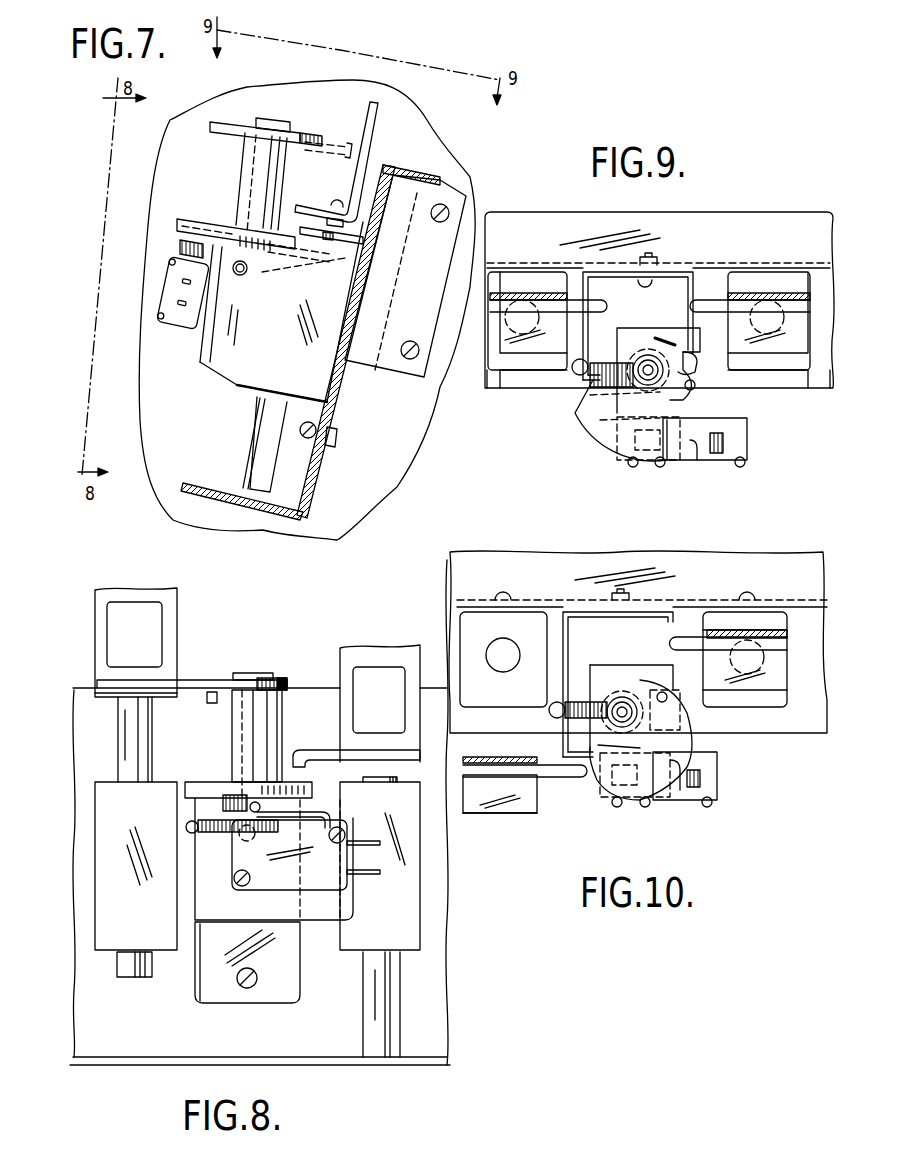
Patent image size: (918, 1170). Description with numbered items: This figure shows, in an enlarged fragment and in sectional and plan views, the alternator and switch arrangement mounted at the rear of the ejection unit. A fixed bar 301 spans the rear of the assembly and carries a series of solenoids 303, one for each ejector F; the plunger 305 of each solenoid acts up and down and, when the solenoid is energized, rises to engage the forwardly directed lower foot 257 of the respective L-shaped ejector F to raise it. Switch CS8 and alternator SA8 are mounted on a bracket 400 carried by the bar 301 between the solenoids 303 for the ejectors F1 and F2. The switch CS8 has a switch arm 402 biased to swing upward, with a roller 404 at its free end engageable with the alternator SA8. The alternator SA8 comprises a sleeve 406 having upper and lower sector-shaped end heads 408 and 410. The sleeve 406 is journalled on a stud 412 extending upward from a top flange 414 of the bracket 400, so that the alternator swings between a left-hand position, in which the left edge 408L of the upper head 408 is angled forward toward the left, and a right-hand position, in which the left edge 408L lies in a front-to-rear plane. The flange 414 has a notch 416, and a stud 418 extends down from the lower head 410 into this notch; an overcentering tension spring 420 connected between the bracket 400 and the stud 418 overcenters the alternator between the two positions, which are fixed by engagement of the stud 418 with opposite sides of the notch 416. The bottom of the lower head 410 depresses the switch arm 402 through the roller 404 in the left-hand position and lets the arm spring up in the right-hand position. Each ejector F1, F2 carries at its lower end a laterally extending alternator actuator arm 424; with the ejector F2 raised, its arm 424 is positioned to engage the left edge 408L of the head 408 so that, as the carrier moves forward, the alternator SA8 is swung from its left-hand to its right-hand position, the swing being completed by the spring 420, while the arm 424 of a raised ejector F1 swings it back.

In FIG. 7, the foot 257 is at (313, 203).
In FIG. 9, the foot 257 is at (487, 387).
In FIG. 10, the foot 257 is at (497, 815).
In FIG. 8, the foot 257 is at (103, 700).
In FIG. 7, the fixed bar 301 is at (453, 163).
In FIG. 9, the fixed bar 301 is at (667, 217).
In FIG. 10, the fixed bar 301 is at (820, 708).
In FIG. 8, the fixed bar 301 is at (120, 1060).
In FIG. 7, the solenoid 303 is at (235, 383).
In FIG. 9, the solenoid 303 is at (515, 372).
In FIG. 8, the solenoid 303 is at (113, 940).
In FIG. 7, the plunger 305 is at (253, 443).
In FIG. 8, the plunger 305 is at (120, 750).
In FIG. 7, the bracket 400 is at (200, 362).
In FIG. 8, the bracket 400 is at (230, 997).
In FIG. 9, the switch arm 402 is at (697, 443).
In FIG. 10, the switch arm 402 is at (680, 787).
In FIG. 8, the switch arm 402 is at (313, 817).
In FIG. 7, the roller 404 is at (180, 253).
In FIG. 8, the roller 404 is at (223, 806).
In FIG. 7, the sleeve 406 is at (245, 177).
In FIG. 8, the sleeve 406 is at (233, 742).
In FIG. 7, the upper head 408 is at (217, 133).
In FIG. 9, the upper head 408 is at (600, 430).
In FIG. 10, the upper head 408 is at (625, 773).
In FIG. 8, the upper head 408 is at (222, 682).
In FIG. 9, the left edge of upper head 408L is at (587, 380).
In FIG. 10, the left edge of upper head 408L is at (560, 753).
In FIG. 7, the lower head 410 is at (187, 217).
In FIG. 9, the lower head 410 is at (607, 457).
In FIG. 10, the lower head 410 is at (657, 800).
In FIG. 8, the lower head 410 is at (210, 782).
In FIG. 7, the stud 412 is at (273, 122).
In FIG. 9, the stud 412 is at (648, 357).
In FIG. 10, the stud 412 is at (620, 697).
In FIG. 8, the stud 412 is at (257, 673).
In FIG. 7, the top flange 414 is at (312, 258).
In FIG. 9, the top flange 414 is at (602, 373).
In FIG. 10, the top flange 414 is at (588, 668).
In FIG. 7, the notch 416 is at (268, 271).
In FIG. 9, the notch 416 is at (690, 361).
In FIG. 10, the notch 416 is at (680, 722).
In FIG. 7, the stud 418 is at (246, 273).
In FIG. 9, the stud 418 is at (700, 400).
In FIG. 10, the stud 418 is at (683, 690).
In FIG. 7, the overcentering tension spring 420 is at (233, 287).
In FIG. 10, the overcentering tension spring 420 is at (577, 697).
In FIG. 8, the overcentering tension spring 420 is at (187, 827).
In FIG. 7, the alternator actuator arm 424 is at (365, 236).
In FIG. 9, the alternator actuator arm 424 is at (610, 303).
In FIG. 10, the alternator actuator arm 424 is at (663, 641).
In FIG. 8, the alternator actuator arm 424 is at (183, 690).
In FIG. 7, the switch CS8 is at (185, 330).
In FIG. 9, the switch CS8 is at (733, 453).
In FIG. 10, the switch CS8 is at (713, 783).
In FIG. 8, the switch CS8 is at (250, 885).
In FIG. 7, the alternator SA8 is at (298, 125).
In FIG. 8, the alternator SA8 is at (277, 672).
In FIG. 7, the ejector F is at (380, 104).
In FIG. 9, the ejector F1 is at (765, 290).
In FIG. 10, the ejector F1 is at (745, 659).
In FIG. 8, the ejector F1 is at (383, 648).
In FIG. 9, the ejector F2 is at (522, 290).
In FIG. 10, the ejector F2 is at (485, 757).
In FIG. 8, the ejector F2 is at (128, 588).